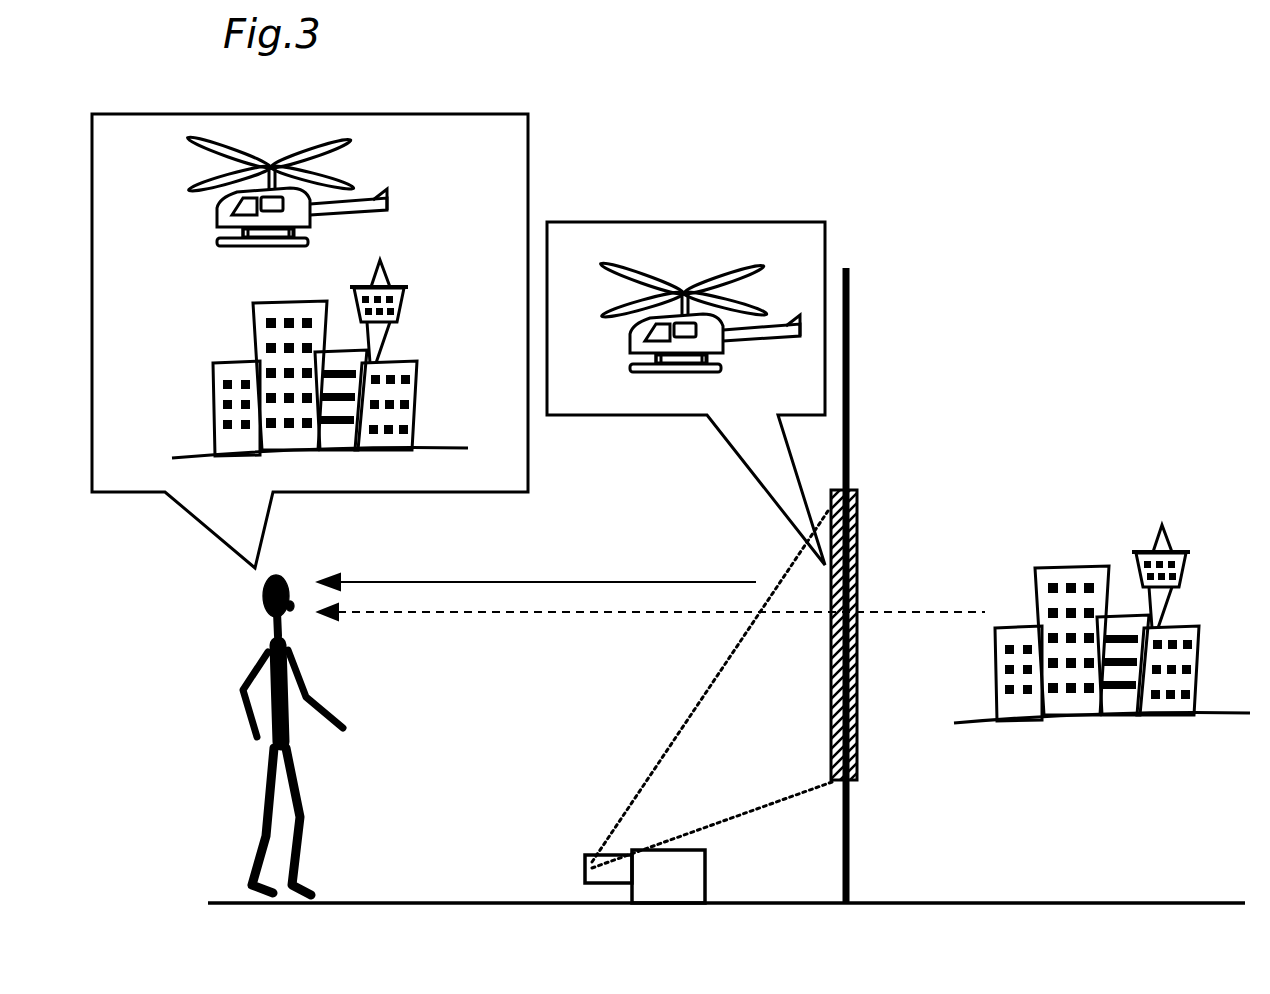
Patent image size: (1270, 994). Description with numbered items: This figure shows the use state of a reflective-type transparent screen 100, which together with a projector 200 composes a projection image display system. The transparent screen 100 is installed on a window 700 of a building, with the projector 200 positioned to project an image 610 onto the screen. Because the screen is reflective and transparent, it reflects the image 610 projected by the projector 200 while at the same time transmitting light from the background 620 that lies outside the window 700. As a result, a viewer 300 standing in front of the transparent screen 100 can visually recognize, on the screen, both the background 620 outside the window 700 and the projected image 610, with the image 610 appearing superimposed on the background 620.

The transparent screen 100 is at (837, 785).
The projector 200 is at (698, 880).
The viewer 300 is at (237, 677).
The image 610 is at (685, 222).
The background 620 is at (1097, 507).
The window 700 is at (850, 432).